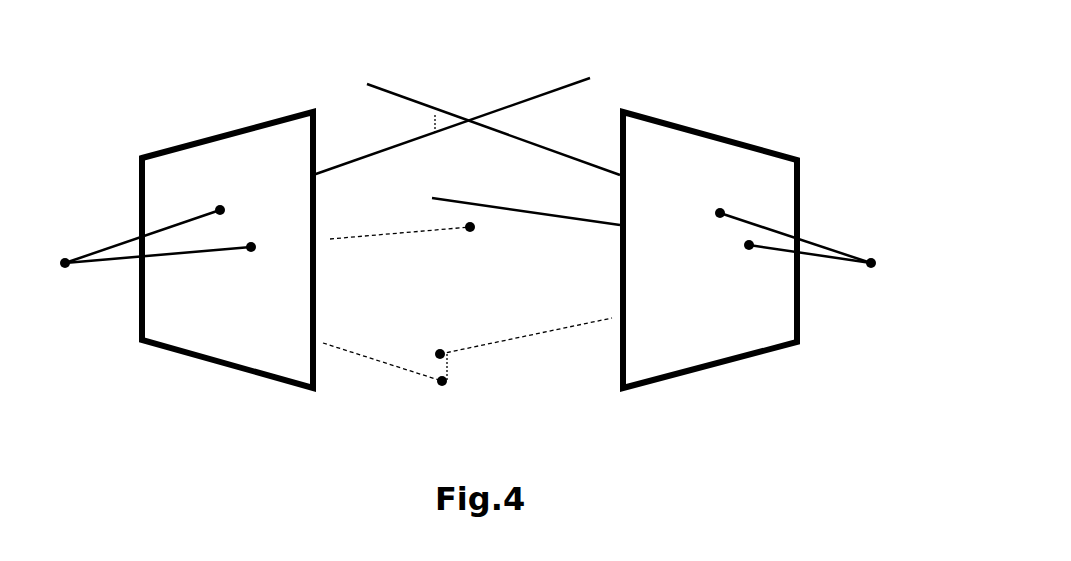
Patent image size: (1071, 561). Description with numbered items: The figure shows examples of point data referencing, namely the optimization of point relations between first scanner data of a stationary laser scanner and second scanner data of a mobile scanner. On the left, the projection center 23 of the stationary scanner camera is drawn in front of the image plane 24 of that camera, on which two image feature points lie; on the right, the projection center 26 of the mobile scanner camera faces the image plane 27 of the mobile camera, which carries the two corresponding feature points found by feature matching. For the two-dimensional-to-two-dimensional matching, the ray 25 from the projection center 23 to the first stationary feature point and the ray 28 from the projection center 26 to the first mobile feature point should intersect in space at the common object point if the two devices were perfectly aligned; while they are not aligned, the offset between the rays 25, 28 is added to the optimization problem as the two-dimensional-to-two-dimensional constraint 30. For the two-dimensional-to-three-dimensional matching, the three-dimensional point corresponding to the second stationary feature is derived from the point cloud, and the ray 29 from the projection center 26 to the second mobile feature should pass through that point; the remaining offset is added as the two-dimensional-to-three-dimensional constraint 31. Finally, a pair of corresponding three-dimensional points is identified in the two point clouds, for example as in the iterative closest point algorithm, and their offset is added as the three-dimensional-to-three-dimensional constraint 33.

The projection center of the stationary scanner TLS 23 is at (66, 260).
The image plane of the TLS camera 24 is at (220, 366).
The ray 25 is at (451, 143).
The projection center of the mobile scanner MS 26 is at (871, 260).
The image plane of the MS camera 27 is at (706, 370).
The ray 28 is at (493, 129).
The ray 29 is at (526, 201).
The 2D-to-2D constraint 30 is at (435, 115).
The 2D-to-3D constraint 31 is at (478, 212).
The 3D-to-3D constraint 33 is at (447, 368).